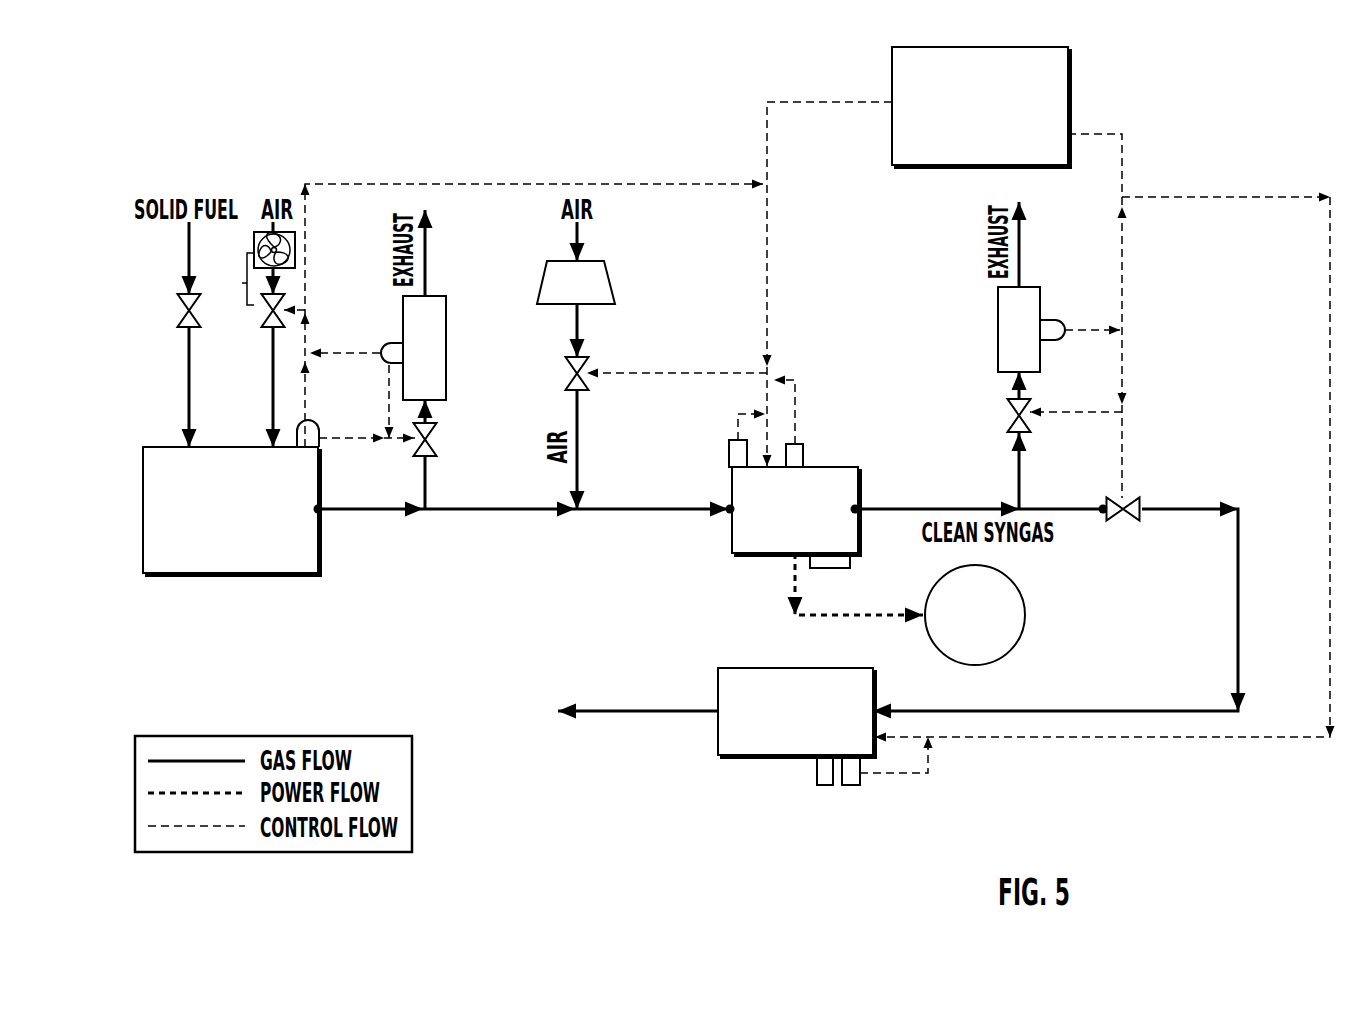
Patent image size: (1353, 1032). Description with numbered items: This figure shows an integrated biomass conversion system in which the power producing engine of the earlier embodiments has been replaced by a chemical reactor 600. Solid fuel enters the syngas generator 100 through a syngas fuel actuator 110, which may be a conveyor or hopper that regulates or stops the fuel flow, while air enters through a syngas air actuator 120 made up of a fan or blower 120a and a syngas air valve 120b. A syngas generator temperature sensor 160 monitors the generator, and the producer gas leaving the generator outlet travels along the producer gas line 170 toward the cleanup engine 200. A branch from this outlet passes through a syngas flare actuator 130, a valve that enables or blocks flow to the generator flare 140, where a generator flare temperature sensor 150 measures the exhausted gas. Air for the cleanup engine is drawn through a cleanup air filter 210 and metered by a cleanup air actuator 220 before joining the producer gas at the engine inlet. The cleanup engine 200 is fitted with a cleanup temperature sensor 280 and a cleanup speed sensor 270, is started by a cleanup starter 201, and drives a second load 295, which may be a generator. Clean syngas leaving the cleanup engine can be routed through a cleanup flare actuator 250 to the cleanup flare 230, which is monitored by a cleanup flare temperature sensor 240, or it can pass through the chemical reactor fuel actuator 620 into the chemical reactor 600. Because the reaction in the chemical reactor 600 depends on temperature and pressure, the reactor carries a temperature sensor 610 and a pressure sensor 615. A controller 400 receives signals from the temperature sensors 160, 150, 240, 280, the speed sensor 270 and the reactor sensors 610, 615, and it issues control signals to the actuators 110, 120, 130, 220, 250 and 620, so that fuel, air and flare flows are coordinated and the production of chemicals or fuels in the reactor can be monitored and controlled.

The syngas generator 100 is at (192, 573).
The syngas fuel actuator 110 is at (182, 318).
The syngas air actuator 120 is at (242, 283).
The fan or blower 120a is at (295, 254).
The syngas air valve 120b is at (282, 297).
The syngas flare actuator 130 is at (437, 436).
The generator flare 140 is at (447, 343).
The generator flare temperature sensor 150 is at (397, 345).
The syngas generator temperature sensor 160 is at (320, 428).
The producer gas line 170 is at (493, 511).
The cleanup engine 200 is at (851, 467).
The cleanup starter 201 is at (830, 568).
The cleanup air filter 210 is at (608, 285).
The cleanup air actuator 220 is at (565, 359).
The cleanup flare 230 is at (998, 323).
The cleanup flare temperature sensor 240 is at (1050, 316).
The cleanup flare actuator 250 is at (1008, 402).
The cleanup speed sensor 270 is at (803, 455).
The cleanup temperature sensor 280 is at (728, 453).
The second load 295 is at (1017, 610).
The controller 400 is at (1070, 95).
The chemical reactor 600 is at (750, 668).
The temperature sensor 610 is at (852, 785).
The pressure sensor 615 is at (826, 785).
The chemical reactor fuel actuator 620 is at (1110, 523).